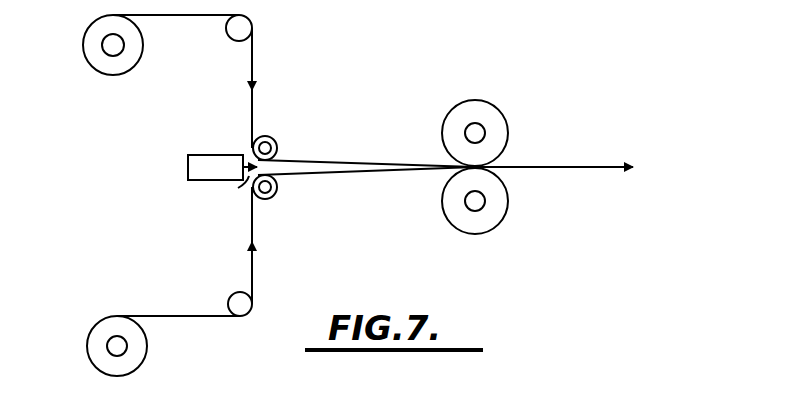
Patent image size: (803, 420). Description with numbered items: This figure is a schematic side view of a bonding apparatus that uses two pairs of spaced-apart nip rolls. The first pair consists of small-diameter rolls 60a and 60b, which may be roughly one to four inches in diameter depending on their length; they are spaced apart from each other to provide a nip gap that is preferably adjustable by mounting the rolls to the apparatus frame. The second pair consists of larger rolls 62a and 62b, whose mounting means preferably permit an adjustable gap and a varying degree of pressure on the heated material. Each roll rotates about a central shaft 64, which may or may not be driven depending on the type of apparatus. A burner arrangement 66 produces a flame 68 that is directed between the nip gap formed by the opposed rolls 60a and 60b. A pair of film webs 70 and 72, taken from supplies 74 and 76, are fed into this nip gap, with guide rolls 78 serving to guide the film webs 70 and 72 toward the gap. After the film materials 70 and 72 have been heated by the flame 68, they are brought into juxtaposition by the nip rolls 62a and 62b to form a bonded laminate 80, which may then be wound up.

The nip roll 60a is at (262, 137).
The nip roll 60b is at (268, 197).
The nip roll 62a is at (500, 105).
The nip roll 62b is at (505, 226).
The central shaft 64 is at (271, 145).
The burner arrangement 66 is at (188, 167).
The flame 68 is at (238, 188).
The film web 70 is at (253, 55).
The film web 72 is at (253, 262).
The supply 74 is at (103, 63).
The supply 76 is at (103, 330).
The guide roll 78 is at (242, 28).
The bonded laminate 80 is at (597, 165).